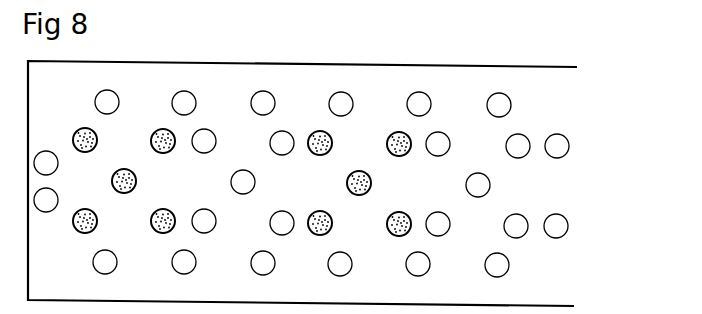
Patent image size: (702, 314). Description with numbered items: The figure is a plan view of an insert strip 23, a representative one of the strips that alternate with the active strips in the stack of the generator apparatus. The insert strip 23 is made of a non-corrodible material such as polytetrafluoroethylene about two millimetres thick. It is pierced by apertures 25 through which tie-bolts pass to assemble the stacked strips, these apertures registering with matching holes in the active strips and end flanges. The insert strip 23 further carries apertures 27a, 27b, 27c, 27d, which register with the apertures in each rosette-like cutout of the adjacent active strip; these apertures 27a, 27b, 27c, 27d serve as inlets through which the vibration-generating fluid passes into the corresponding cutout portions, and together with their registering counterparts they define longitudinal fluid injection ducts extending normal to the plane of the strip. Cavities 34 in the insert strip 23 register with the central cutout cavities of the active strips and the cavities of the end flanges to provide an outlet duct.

The insert strip 23 is at (502, 78).
The apertures 25 is at (110, 100).
The aperture 27a is at (85, 221).
The aperture 27b is at (83, 137).
The aperture 27c is at (163, 140).
The aperture 27d is at (167, 215).
The cavities 34 is at (247, 182).